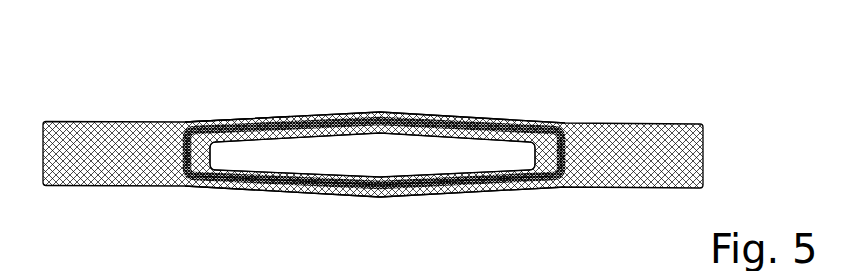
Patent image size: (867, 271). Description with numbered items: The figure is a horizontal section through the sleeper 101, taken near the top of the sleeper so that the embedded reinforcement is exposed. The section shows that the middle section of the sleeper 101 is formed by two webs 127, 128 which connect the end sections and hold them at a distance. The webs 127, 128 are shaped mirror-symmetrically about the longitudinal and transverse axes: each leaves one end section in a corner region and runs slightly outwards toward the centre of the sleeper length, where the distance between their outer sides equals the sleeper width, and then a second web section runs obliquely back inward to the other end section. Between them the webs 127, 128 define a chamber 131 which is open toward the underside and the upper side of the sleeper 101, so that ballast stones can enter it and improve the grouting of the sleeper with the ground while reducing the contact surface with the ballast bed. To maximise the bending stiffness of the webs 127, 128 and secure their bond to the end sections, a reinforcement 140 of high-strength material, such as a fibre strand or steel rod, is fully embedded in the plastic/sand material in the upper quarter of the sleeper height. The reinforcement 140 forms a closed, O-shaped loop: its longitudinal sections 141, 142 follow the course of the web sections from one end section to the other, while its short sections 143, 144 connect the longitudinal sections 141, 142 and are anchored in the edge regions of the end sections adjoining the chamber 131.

The sleeper 101 is at (132, 107).
The web 127 is at (410, 115).
The web 128 is at (435, 195).
The chamber 131 is at (398, 166).
The reinforcement 140 is at (342, 113).
The longitudinal section 141 is at (267, 118).
The longitudinal section 142 is at (315, 195).
The short section 143 is at (183, 158).
The short section 144 is at (570, 148).